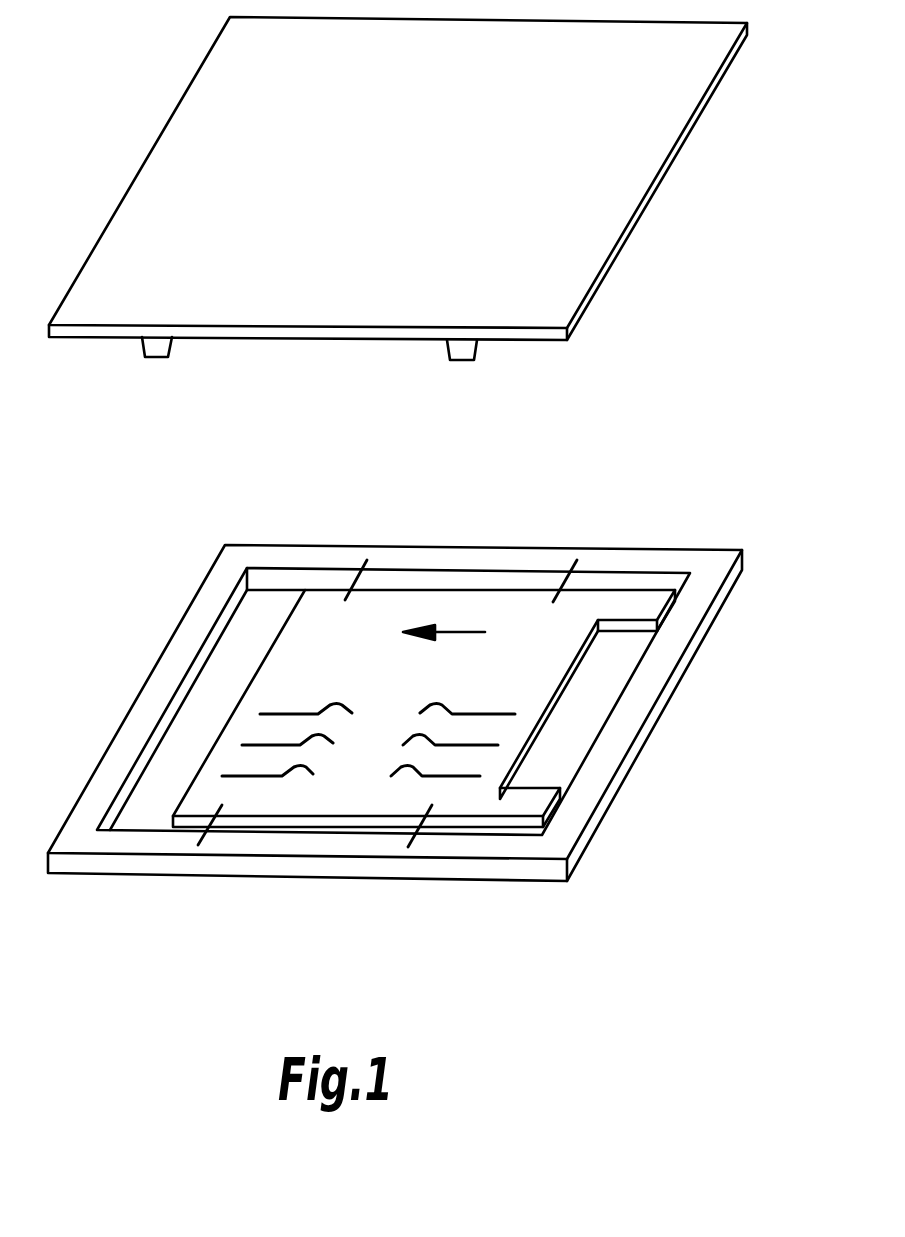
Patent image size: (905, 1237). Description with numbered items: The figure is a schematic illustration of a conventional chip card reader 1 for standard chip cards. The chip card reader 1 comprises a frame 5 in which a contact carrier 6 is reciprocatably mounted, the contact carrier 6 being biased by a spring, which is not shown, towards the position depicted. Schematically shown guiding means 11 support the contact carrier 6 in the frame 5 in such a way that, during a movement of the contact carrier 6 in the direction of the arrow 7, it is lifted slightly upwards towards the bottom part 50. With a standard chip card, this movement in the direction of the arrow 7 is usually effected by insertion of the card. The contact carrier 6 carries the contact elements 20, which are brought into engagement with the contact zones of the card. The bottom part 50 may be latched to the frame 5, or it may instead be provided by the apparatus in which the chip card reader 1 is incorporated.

The chip card reader 1 is at (120, 628).
The frame 5 is at (145, 845).
The contact carrier 6 is at (200, 783).
The arrow 7 is at (470, 632).
The guiding means 11 is at (347, 578).
The contact elements 20 is at (480, 772).
The bottom part 50 is at (620, 180).